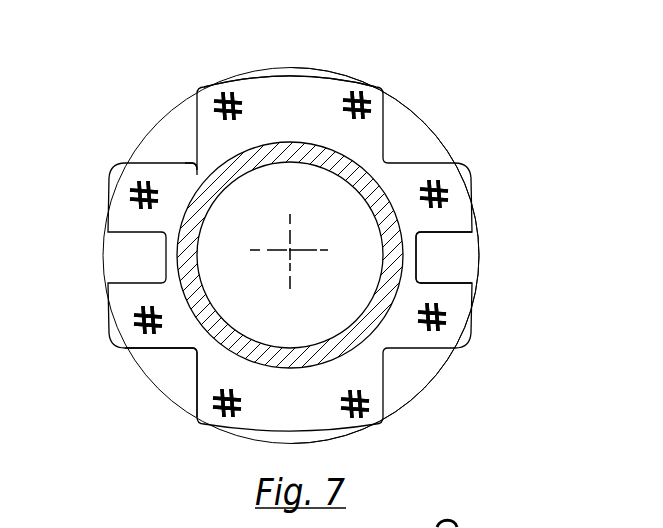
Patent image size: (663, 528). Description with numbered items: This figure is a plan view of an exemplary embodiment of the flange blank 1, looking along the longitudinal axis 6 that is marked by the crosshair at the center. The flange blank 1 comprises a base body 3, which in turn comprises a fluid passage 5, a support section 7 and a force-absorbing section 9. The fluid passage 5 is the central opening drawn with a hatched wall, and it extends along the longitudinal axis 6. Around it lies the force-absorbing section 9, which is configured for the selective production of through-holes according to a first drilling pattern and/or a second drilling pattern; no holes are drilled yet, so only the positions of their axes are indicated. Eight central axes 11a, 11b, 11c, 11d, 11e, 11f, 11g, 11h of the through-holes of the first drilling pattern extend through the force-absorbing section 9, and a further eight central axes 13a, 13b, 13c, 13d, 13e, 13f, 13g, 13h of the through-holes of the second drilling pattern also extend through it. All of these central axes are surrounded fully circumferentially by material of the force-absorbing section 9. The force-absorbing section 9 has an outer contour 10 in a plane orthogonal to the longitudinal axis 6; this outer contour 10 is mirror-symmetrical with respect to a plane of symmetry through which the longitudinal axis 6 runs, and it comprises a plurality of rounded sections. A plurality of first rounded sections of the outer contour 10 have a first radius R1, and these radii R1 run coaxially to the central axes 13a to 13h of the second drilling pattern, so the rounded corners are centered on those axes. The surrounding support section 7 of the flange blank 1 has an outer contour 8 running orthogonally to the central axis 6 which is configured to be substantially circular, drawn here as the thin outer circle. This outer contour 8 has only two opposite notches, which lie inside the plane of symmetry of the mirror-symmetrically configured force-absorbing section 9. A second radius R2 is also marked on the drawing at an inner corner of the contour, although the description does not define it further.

The flange blank 1 is at (324, 264).
The base body 3 is at (430, 392).
The fluid passage 5 is at (317, 198).
The longitudinal axis 6 is at (302, 245).
The support section 7 is at (463, 267).
The outer contour of the support section 8 is at (163, 113).
The force-absorbing section 9 is at (295, 100).
The outer contour of the force-absorbing section 10 is at (193, 372).
The central axis 11a is at (213, 83).
The central axis 11b is at (125, 176).
The central axis 11c is at (139, 334).
The central axis 11d is at (208, 406).
The central axis 11e is at (372, 418).
The central axis 11f is at (451, 329).
The central axis 11g is at (450, 178).
The central axis 11h is at (366, 112).
The central axis 13a is at (245, 97).
The central axis 13b is at (136, 212).
The central axis 13c is at (137, 300).
The central axis 13d is at (241, 387).
The central axis 13e is at (346, 386).
The central axis 13f is at (454, 302).
The central axis 13g is at (443, 217).
The central axis 13h is at (345, 93).
The first radius R1 is at (376, 117).
The corner radius R2 is at (197, 163).